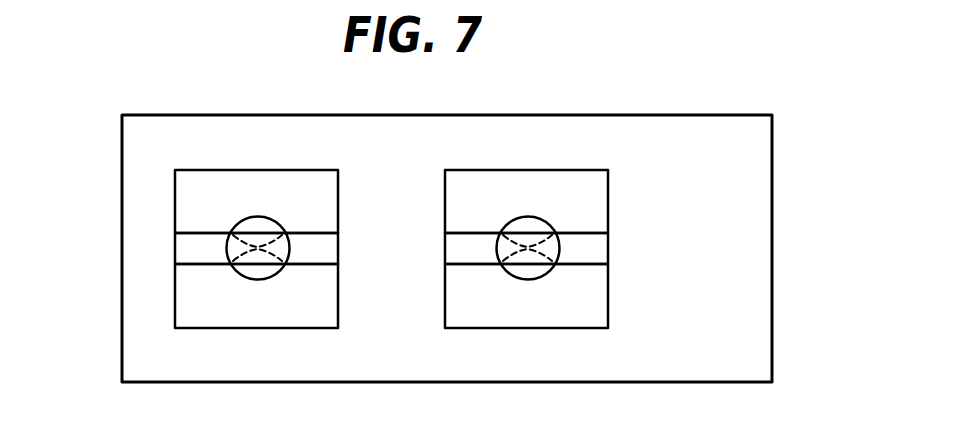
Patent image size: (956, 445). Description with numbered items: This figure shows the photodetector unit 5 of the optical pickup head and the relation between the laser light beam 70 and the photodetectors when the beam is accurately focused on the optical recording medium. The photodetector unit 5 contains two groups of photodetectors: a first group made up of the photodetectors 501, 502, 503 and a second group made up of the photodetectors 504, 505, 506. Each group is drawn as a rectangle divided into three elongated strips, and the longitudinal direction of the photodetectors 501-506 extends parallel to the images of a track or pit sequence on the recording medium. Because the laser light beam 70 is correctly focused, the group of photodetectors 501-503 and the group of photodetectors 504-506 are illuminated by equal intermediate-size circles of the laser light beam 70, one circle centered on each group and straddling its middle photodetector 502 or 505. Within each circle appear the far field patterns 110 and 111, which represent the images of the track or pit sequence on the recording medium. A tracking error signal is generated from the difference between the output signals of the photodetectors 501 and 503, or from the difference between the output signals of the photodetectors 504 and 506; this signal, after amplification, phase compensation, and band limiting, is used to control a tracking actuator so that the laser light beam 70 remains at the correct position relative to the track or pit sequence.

The photodetector unit 5 is at (762, 260).
The photodetector 501 is at (600, 190).
The photodetector 502 is at (600, 246).
The photodetector 503 is at (598, 306).
The photodetector 504 is at (185, 208).
The photodetector 505 is at (185, 250).
The photodetector 506 is at (190, 306).
The laser light beam 70 is at (271, 216).
The far field pattern 110 is at (236, 262).
The far field pattern 111 is at (241, 238).